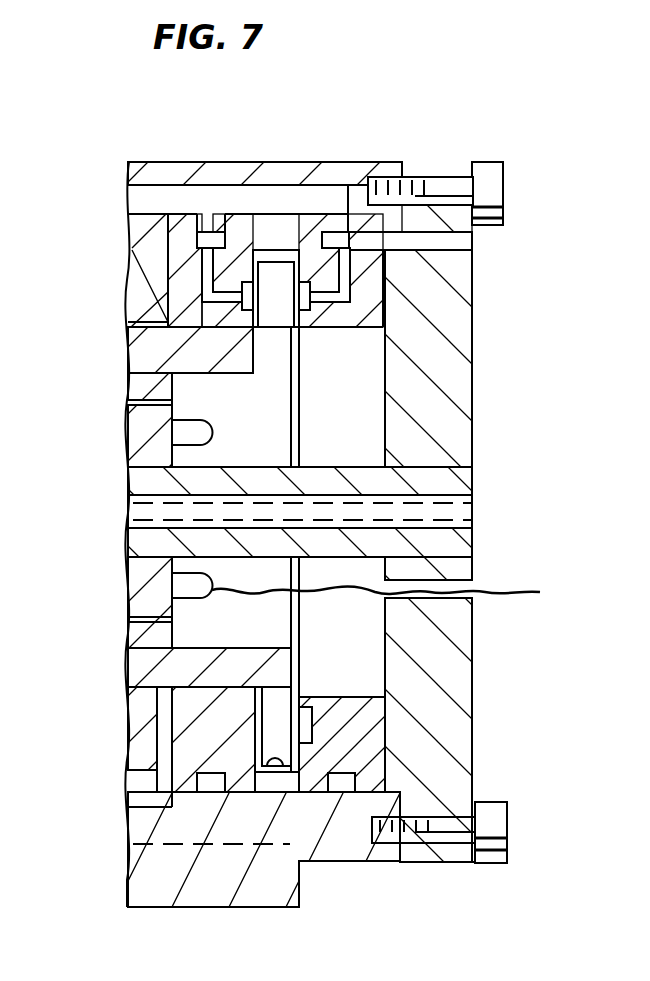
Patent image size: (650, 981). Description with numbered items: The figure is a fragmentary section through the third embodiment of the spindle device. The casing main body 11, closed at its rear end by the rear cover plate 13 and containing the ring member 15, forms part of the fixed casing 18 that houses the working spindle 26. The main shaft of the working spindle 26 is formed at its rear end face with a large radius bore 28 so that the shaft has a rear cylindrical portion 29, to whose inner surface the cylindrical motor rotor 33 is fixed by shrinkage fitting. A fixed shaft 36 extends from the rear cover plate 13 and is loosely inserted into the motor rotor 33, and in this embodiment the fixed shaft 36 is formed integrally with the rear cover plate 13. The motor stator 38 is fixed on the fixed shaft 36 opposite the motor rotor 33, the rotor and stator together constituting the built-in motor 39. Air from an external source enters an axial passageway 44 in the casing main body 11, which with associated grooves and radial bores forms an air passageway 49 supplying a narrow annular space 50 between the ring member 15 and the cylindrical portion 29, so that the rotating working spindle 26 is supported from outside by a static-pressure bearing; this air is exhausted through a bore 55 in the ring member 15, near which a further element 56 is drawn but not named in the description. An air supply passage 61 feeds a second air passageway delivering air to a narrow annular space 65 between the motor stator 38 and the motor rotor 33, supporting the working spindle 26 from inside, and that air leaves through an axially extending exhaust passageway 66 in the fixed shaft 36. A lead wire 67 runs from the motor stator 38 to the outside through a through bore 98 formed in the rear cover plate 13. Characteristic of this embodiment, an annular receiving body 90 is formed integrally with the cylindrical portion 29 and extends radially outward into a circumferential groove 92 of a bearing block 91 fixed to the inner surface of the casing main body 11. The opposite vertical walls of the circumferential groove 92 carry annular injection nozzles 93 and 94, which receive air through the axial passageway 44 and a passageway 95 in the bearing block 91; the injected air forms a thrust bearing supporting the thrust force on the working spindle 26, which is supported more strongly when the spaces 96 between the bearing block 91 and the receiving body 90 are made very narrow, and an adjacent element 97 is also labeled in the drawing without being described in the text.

The casing main body 11 is at (231, 178).
The rear cover plate 13 is at (462, 332).
The ring member 15 is at (131, 270).
The fixed casing 18 is at (405, 162).
The working spindle 26 is at (123, 356).
The large radius bore 28 is at (252, 377).
The cylindrical portion 29 is at (133, 378).
The motor rotor 33 is at (130, 628).
The fixed shaft 36 is at (326, 468).
The motor stator 38 is at (133, 460).
The built-in motor 39 is at (120, 582).
The axial passageway 44 is at (151, 200).
The air passageway 49 is at (323, 176).
The annular space 50 is at (133, 324).
The bore 55 is at (174, 742).
The bracket 56 is at (162, 798).
The air supply passage 61 is at (473, 496).
The annular space 65 is at (133, 408).
The exhaust passageway 66 is at (478, 516).
The lead wire 67 is at (545, 592).
The receiving body 90 is at (272, 315).
The bearing block 91 is at (450, 292).
The circumferential groove 92 is at (286, 772).
The annular injection nozzle 93 is at (273, 300).
The annular injection nozzle 94 is at (300, 325).
The passageway 95 is at (472, 246).
The space 96 is at (226, 265).
The seal member 97 is at (332, 262).
The through bore 98 is at (478, 598).